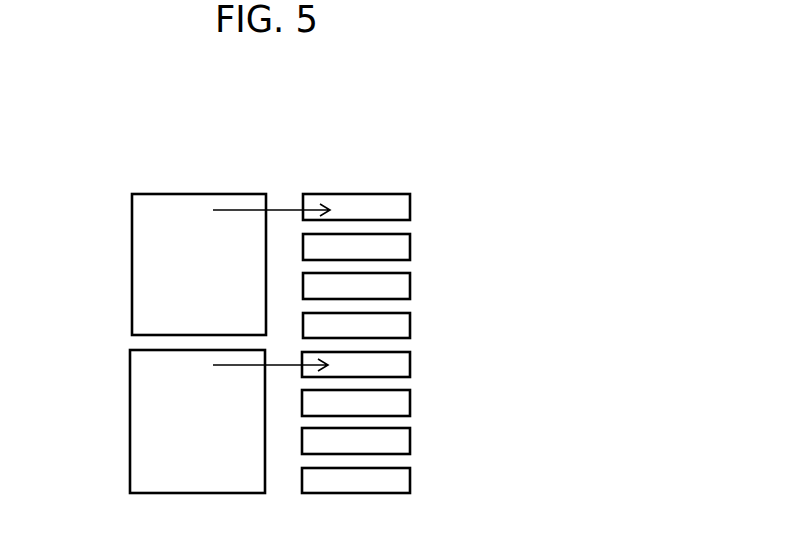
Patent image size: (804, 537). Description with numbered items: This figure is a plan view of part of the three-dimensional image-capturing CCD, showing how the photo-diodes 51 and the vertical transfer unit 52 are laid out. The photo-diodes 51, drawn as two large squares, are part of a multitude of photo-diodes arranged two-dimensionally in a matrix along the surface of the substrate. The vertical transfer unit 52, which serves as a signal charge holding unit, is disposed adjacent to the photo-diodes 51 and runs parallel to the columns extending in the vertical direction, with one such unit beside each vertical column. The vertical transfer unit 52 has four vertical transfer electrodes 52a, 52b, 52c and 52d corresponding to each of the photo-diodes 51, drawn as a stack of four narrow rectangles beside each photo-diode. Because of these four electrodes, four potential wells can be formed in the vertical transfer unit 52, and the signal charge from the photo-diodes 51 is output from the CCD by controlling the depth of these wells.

The photo-diodes 51 is at (167, 300).
The vertical transfer unit 52 is at (376, 173).
The vertical transfer electrode 52a is at (393, 206).
The vertical transfer electrode 52b is at (393, 246).
The vertical transfer electrode 52c is at (393, 285).
The vertical transfer electrode 52d is at (393, 325).